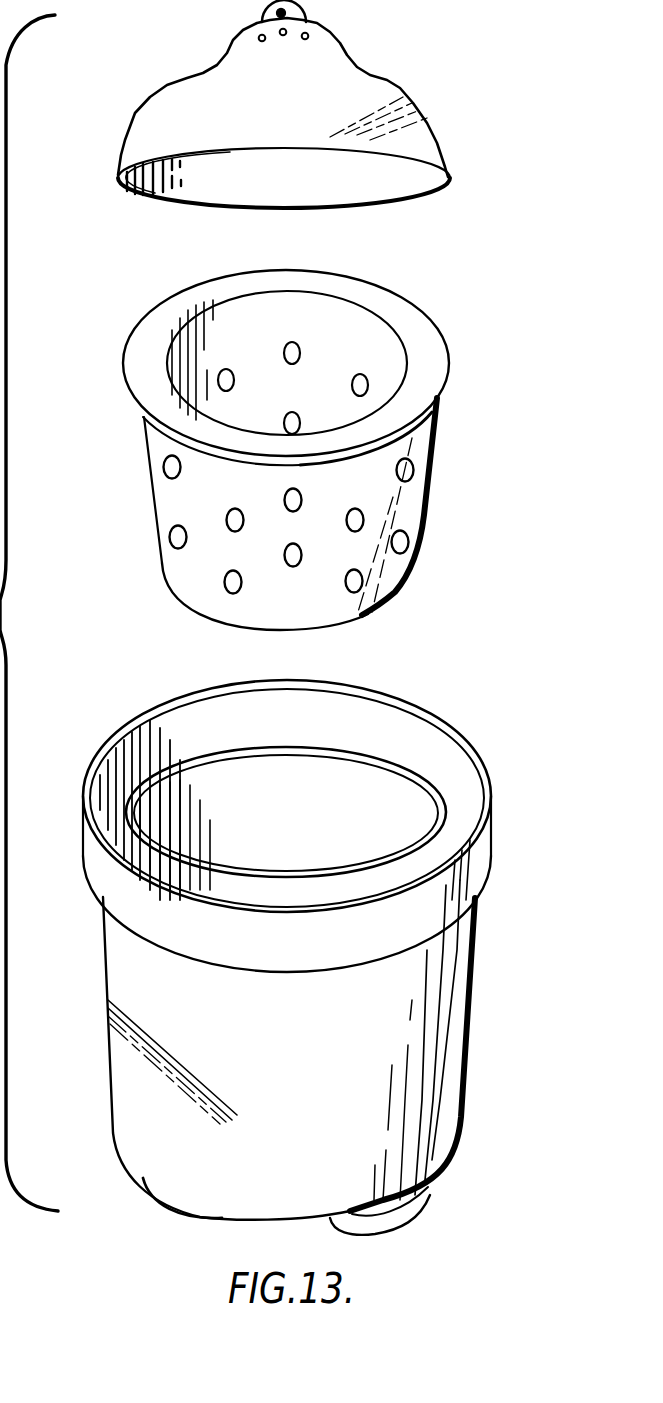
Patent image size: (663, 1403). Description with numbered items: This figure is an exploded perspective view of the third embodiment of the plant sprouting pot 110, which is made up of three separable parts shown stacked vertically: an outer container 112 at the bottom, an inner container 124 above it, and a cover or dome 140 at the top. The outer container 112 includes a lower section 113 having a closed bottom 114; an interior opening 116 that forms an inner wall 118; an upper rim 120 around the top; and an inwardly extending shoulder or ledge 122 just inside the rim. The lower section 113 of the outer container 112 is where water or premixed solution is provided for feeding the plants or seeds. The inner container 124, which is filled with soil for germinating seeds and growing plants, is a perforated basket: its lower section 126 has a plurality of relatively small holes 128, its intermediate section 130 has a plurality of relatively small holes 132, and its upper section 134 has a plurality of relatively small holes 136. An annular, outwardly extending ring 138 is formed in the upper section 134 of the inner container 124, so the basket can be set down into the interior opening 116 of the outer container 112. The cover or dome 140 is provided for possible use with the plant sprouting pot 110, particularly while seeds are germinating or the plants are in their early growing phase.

The plant sprouting pot 110 is at (290, 460).
The outer container 112 is at (292, 1041).
The lower section 113 is at (467, 1092).
The closed bottom 114 is at (358, 1232).
The interior opening 116 is at (329, 952).
The inner wall 118 is at (367, 788).
The upper rim 120 is at (153, 712).
The inwardly extending shoulder or ledge 122 is at (430, 810).
The inner container 124 is at (303, 612).
The lower section 126 is at (163, 590).
The holes 128 is at (230, 588).
The intermediate section 130 is at (423, 490).
The holes 132 is at (170, 535).
The upper section 134 is at (147, 427).
The holes 136 is at (165, 462).
The annular outwardly extending ring 138 is at (410, 300).
The cover or dome 140 is at (330, 111).